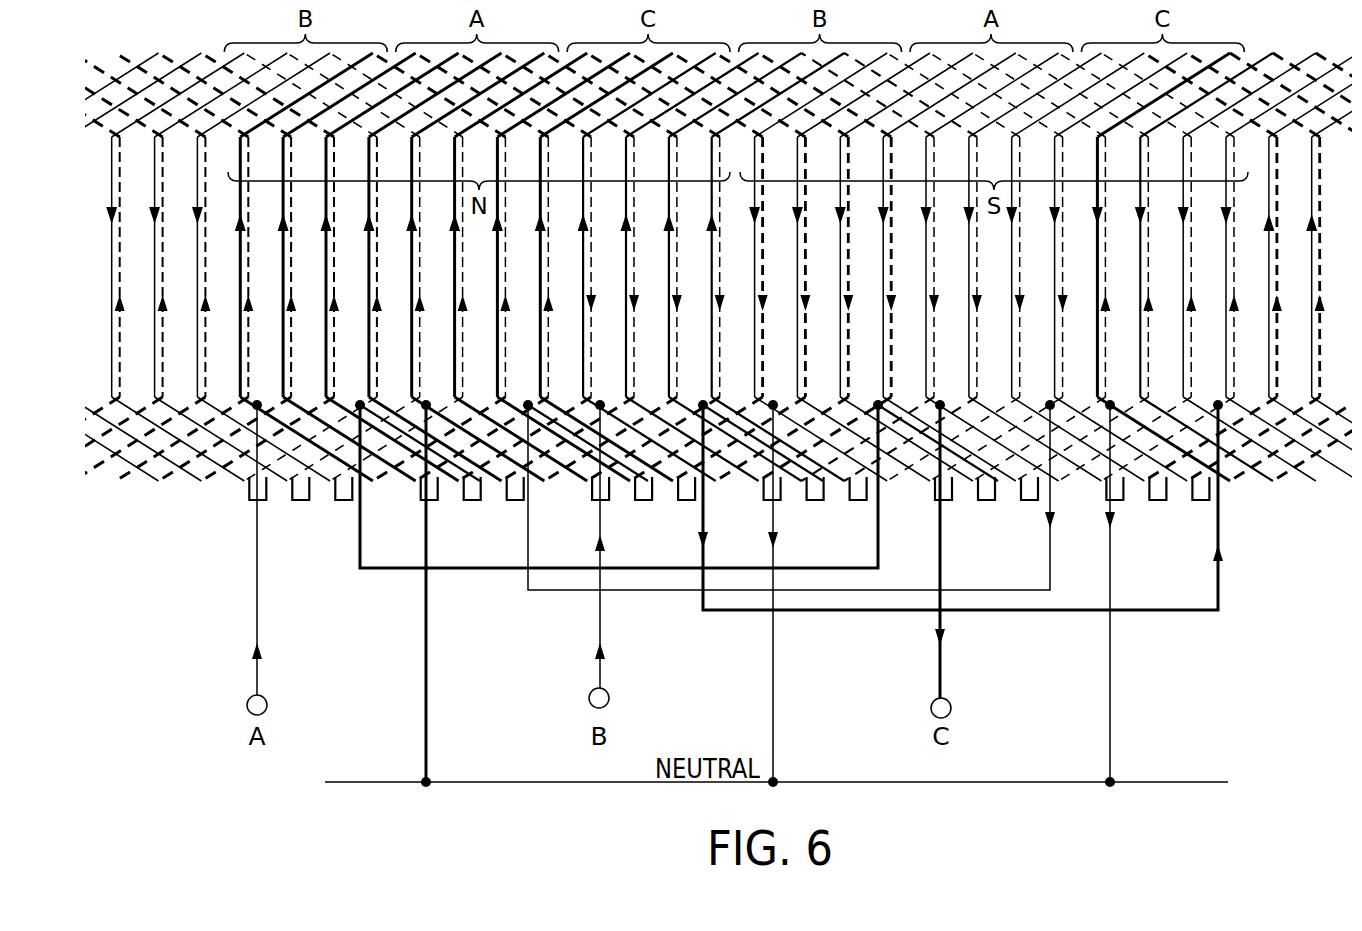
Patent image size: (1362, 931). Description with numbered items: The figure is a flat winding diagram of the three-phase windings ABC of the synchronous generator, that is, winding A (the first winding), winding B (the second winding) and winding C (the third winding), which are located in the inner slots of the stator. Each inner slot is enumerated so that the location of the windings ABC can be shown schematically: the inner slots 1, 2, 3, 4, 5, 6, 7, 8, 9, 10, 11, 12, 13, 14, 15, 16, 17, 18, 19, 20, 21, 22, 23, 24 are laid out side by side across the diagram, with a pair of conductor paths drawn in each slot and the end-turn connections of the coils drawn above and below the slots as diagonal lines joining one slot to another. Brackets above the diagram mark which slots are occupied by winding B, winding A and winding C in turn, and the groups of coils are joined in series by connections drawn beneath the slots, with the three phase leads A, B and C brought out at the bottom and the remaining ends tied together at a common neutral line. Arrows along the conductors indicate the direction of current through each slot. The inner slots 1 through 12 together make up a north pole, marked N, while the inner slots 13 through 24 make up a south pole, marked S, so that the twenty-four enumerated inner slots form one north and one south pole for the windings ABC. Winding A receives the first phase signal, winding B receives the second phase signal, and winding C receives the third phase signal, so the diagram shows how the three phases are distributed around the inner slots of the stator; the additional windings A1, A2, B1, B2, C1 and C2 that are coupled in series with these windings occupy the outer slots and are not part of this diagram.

The inner slot 1 is at (758, 267).
The inner slot 2 is at (801, 267).
The inner slot 3 is at (330, 267).
The inner slot 4 is at (372, 267).
The inner slot 5 is at (415, 267).
The inner slot 6 is at (458, 267).
The inner slot 7 is at (501, 267).
The inner slot 8 is at (544, 267).
The inner slot 9 is at (587, 267).
The inner slot 10 is at (627, 267).
The inner slot 11 is at (669, 267).
The inner slot 12 is at (712, 267).
The inner slot 13 is at (755, 267).
The inner slot 14 is at (798, 267).
The inner slot 15 is at (841, 267).
The inner slot 16 is at (884, 267).
The inner slot 17 is at (927, 267).
The inner slot 18 is at (969, 267).
The inner slot 19 is at (1012, 267).
The inner slot 20 is at (1055, 267).
The inner slot 21 is at (1098, 267).
The inner slot 22 is at (626, 267).
The inner slot 23 is at (669, 267).
The inner slot 24 is at (712, 267).